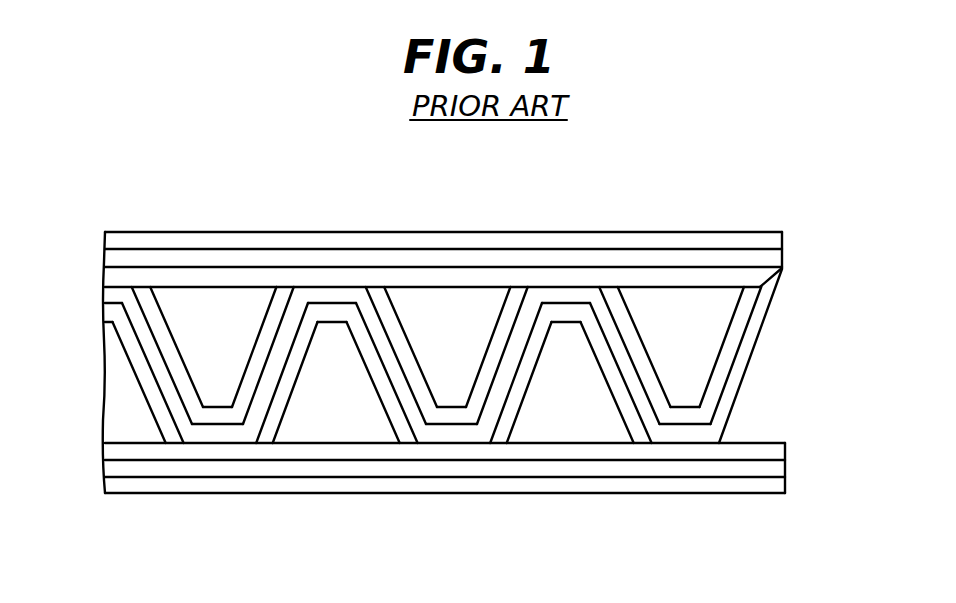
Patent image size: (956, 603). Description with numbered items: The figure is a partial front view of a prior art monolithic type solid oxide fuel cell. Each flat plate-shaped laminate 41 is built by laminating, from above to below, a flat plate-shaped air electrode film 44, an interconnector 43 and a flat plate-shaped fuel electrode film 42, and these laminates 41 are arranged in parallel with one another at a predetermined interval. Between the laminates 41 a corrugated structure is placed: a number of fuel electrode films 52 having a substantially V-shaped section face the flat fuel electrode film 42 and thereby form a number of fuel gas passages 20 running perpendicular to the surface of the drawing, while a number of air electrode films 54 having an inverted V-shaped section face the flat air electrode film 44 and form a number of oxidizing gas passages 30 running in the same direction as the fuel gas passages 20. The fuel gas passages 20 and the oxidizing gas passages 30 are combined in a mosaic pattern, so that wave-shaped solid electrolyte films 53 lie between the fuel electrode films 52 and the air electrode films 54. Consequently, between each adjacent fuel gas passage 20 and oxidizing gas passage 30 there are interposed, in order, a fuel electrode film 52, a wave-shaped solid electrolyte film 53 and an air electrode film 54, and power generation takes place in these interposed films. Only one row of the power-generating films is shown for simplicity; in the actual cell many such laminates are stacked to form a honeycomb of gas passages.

The fuel gas passage 20 is at (192, 320).
The oxidizing gas passage 30 is at (320, 400).
The flat plate-shaped laminate 41 is at (101, 233).
The flat plate-shaped fuel electrode film 42 is at (701, 272).
The interconnector 43 is at (772, 262).
The flat plate-shaped air electrode film 44 is at (782, 233).
The fuel electrode film 52 is at (722, 368).
The wave-shaped solid electrolyte film 53 is at (762, 322).
The air electrode film 54 is at (398, 422).